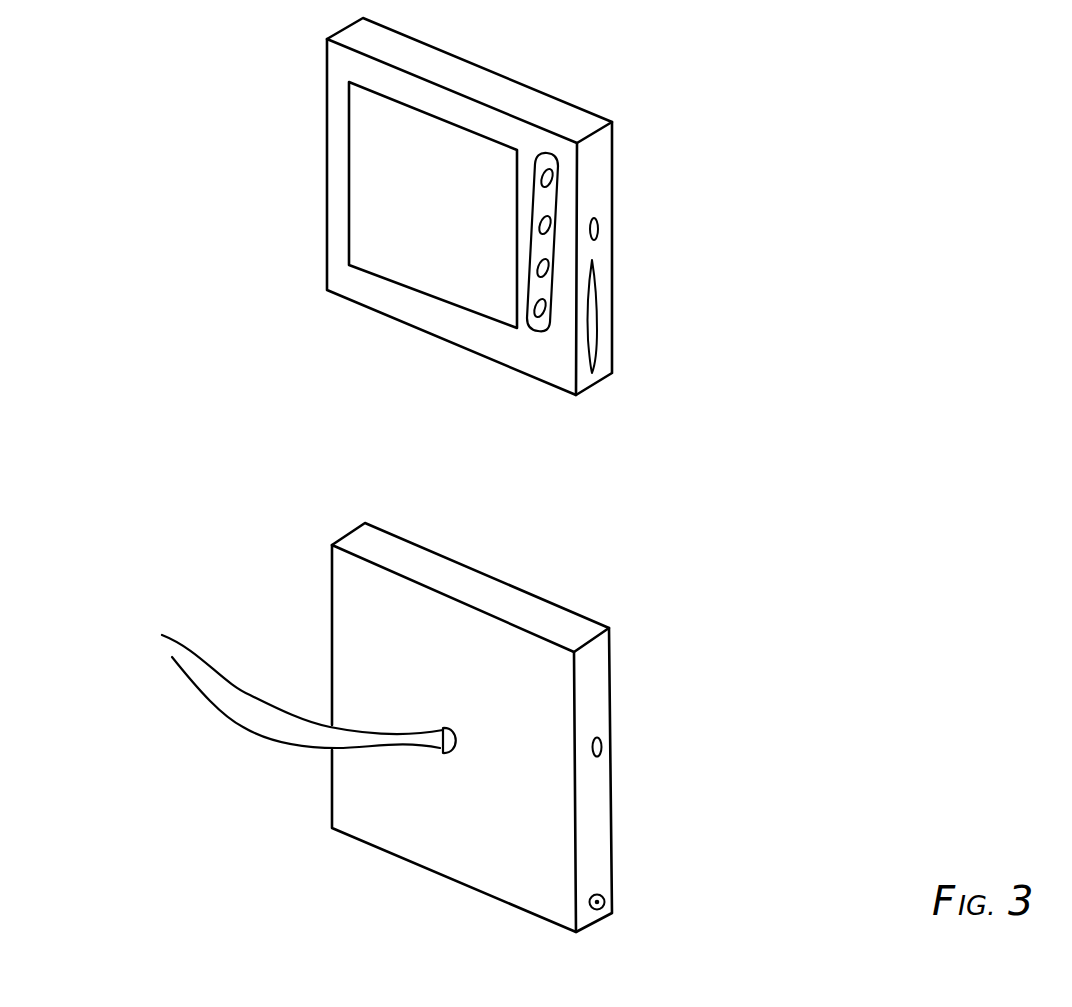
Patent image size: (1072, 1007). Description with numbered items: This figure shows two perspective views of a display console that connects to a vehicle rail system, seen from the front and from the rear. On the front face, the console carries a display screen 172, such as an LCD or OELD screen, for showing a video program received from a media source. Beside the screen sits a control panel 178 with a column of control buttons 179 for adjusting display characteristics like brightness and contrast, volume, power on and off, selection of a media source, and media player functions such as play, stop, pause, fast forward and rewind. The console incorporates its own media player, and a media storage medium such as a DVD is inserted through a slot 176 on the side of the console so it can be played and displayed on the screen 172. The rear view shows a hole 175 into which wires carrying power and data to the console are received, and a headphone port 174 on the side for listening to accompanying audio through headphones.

The display screen 172 is at (388, 265).
The headphone port 174 is at (603, 897).
The hole 175 is at (457, 740).
The slot 176 is at (597, 318).
The control panel 178 is at (552, 198).
The control buttons 179 is at (548, 178).